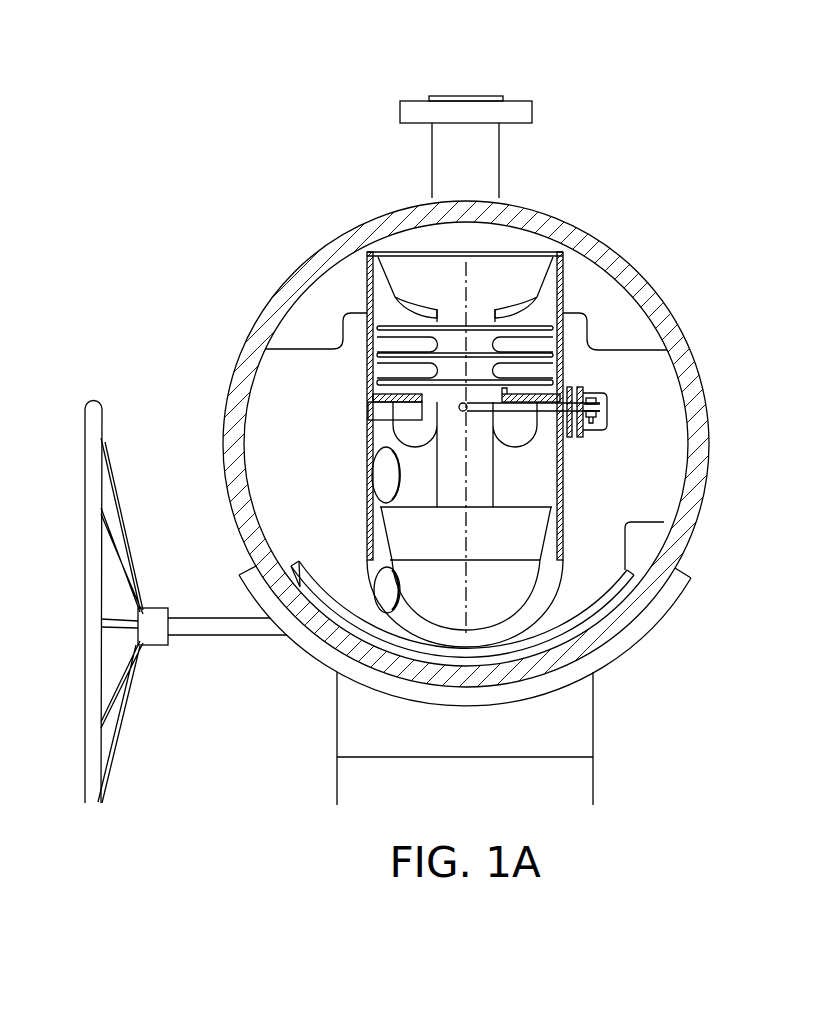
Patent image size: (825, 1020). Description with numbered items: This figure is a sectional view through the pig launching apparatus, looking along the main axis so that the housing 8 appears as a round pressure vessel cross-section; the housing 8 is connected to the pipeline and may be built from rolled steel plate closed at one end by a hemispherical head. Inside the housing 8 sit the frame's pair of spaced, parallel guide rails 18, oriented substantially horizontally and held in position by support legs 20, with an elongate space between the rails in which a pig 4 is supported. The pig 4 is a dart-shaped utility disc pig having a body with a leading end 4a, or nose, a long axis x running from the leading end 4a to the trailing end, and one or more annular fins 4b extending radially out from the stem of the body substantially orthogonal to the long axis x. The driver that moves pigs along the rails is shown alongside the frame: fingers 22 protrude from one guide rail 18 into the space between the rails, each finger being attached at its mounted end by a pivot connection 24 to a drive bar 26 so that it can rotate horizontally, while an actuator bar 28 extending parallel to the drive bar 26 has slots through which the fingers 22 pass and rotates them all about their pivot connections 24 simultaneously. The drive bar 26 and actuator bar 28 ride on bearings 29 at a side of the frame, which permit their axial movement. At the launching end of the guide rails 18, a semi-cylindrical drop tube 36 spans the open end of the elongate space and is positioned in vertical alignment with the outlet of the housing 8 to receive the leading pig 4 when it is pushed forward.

The pig 4 is at (485, 280).
The leading end 4a is at (482, 587).
The annular fins 4b is at (397, 385).
The housing 8 is at (713, 437).
The guide rails 18 is at (500, 323).
The support legs 20 is at (628, 408).
The fingers 22 is at (517, 410).
The pivot connection 24 is at (607, 421).
The drive bar 26 is at (585, 390).
The actuator bar 28 is at (569, 387).
The bearings 29 is at (578, 440).
The drop tube 36 is at (383, 300).
The long axis x is at (467, 543).